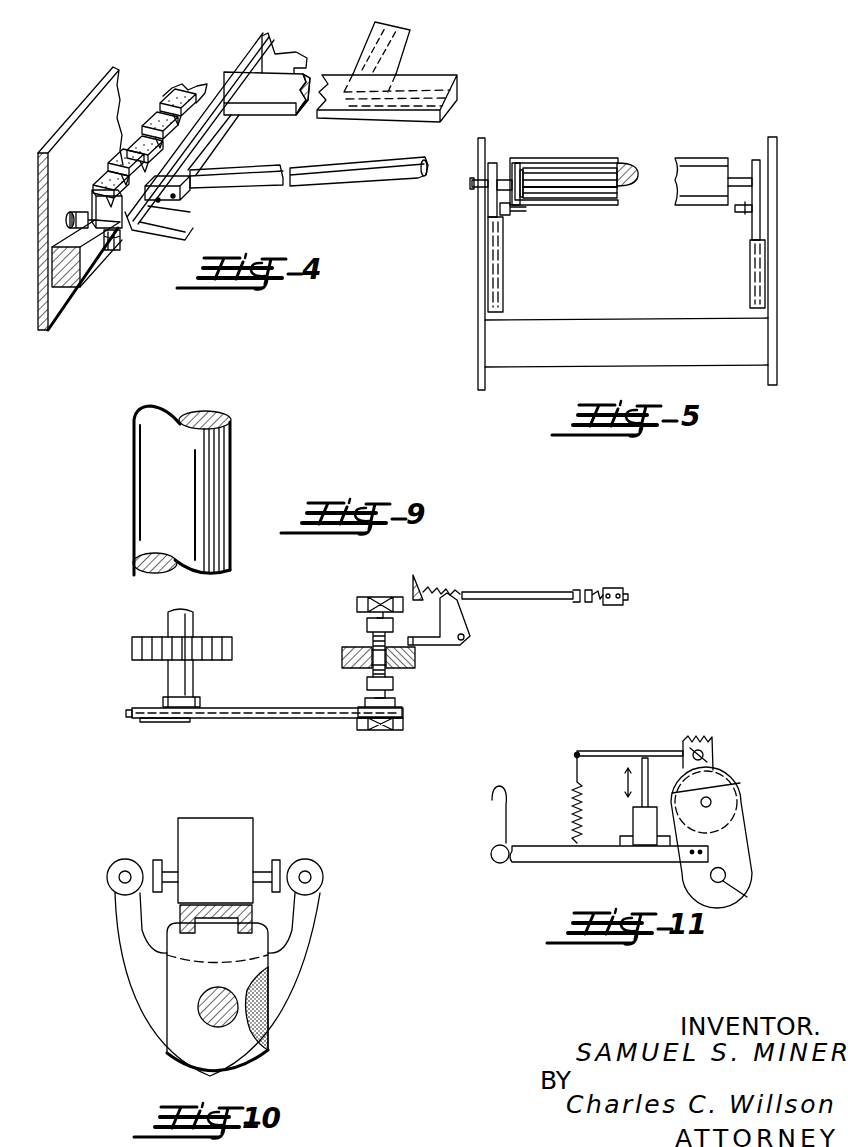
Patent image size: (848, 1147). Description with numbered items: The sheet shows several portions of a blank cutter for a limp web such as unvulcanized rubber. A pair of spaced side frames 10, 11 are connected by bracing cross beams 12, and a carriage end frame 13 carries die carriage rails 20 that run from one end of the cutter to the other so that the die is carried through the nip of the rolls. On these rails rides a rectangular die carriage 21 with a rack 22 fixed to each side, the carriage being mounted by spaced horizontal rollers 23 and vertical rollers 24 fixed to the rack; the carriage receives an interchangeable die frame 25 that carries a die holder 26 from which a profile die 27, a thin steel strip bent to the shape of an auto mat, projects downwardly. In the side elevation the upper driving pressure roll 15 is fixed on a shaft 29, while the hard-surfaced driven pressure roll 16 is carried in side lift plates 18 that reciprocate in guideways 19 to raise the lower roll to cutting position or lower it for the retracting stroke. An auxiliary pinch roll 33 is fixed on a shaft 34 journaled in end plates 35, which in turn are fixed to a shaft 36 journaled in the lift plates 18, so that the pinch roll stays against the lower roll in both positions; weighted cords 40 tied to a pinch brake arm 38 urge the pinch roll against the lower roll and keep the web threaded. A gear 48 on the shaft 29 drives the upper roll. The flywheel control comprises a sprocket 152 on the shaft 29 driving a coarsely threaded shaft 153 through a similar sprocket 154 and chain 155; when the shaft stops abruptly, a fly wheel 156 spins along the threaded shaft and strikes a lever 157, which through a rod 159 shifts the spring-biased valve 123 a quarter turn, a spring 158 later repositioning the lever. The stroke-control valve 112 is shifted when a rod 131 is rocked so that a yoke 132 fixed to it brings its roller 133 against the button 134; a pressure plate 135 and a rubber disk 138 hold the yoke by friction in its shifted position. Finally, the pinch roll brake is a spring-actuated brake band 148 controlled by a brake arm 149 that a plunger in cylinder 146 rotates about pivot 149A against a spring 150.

In FIG. 5, the side frame 10 is at (478, 228).
In FIG. 5, the side frame 11 is at (777, 322).
In FIG. 5, the bracing cross beams 12 is at (708, 360).
In FIG. 4, the carriage end frame 13 is at (96, 108).
In FIG. 9, the driving pressure roll 15 is at (145, 458).
In FIG. 5, the driven pressure roll 16 is at (582, 158).
In FIG. 5, the side lift plates 18 is at (494, 163).
In FIG. 5, the guideways 19 is at (503, 284).
In FIG. 4, the die carriage rails 20 is at (100, 300).
In FIG. 4, the die carriage 21 is at (166, 232).
In FIG. 4, the rack 22 is at (150, 112).
In FIG. 4, the horizontal rollers 23 is at (80, 210).
In FIG. 4, the vertical rollers 24 is at (110, 258).
In FIG. 4, the die frame 25 is at (325, 182).
In FIG. 4, the die holder 26 is at (340, 68).
In FIG. 4, the profile die 27 is at (455, 98).
In FIG. 9, the shaft 29 is at (170, 676).
In FIG. 5, the auxiliary pinch roll 33 is at (610, 210).
In FIG. 5, the shaft 34 is at (516, 170).
In FIG. 5, the end plates 35 is at (514, 214).
In FIG. 5, the shaft 36 is at (528, 216).
In FIG. 11, the shaft 36 is at (735, 888).
In FIG. 11, the pinch brake arm 38 is at (540, 868).
In FIG. 11, the cords 40 is at (498, 824).
In FIG. 9, the gear 48 is at (132, 650).
In FIG. 10, the valve 112 is at (202, 822).
In FIG. 9, the valve 123 is at (612, 590).
In FIG. 10, the rod 131 is at (208, 1026).
In FIG. 10, the yoke 132 is at (318, 938).
In FIG. 10, the roller 133 is at (114, 866).
In FIG. 10, the button 134 is at (270, 862).
In FIG. 10, the pressure plate 135 is at (170, 1058).
In FIG. 10, the rubber disk 138 is at (268, 1007).
In FIG. 11, the cylinder 146 is at (646, 850).
In FIG. 11, the brake band 148 is at (712, 742).
In FIG. 11, the brake arm 149 is at (630, 750).
In FIG. 11, the pivot 149A is at (710, 753).
In FIG. 11, the spring 150 is at (572, 814).
In FIG. 9, the sprocket 152 is at (135, 720).
In FIG. 9, the threaded shaft 153 is at (395, 682).
In FIG. 9, the sprocket 154 is at (398, 710).
In FIG. 9, the chain 155 is at (293, 716).
In FIG. 9, the fly wheel 156 is at (342, 670).
In FIG. 9, the lever 157 is at (410, 632).
In FIG. 9, the spring 158 is at (436, 588).
In FIG. 9, the rod 159 is at (530, 578).